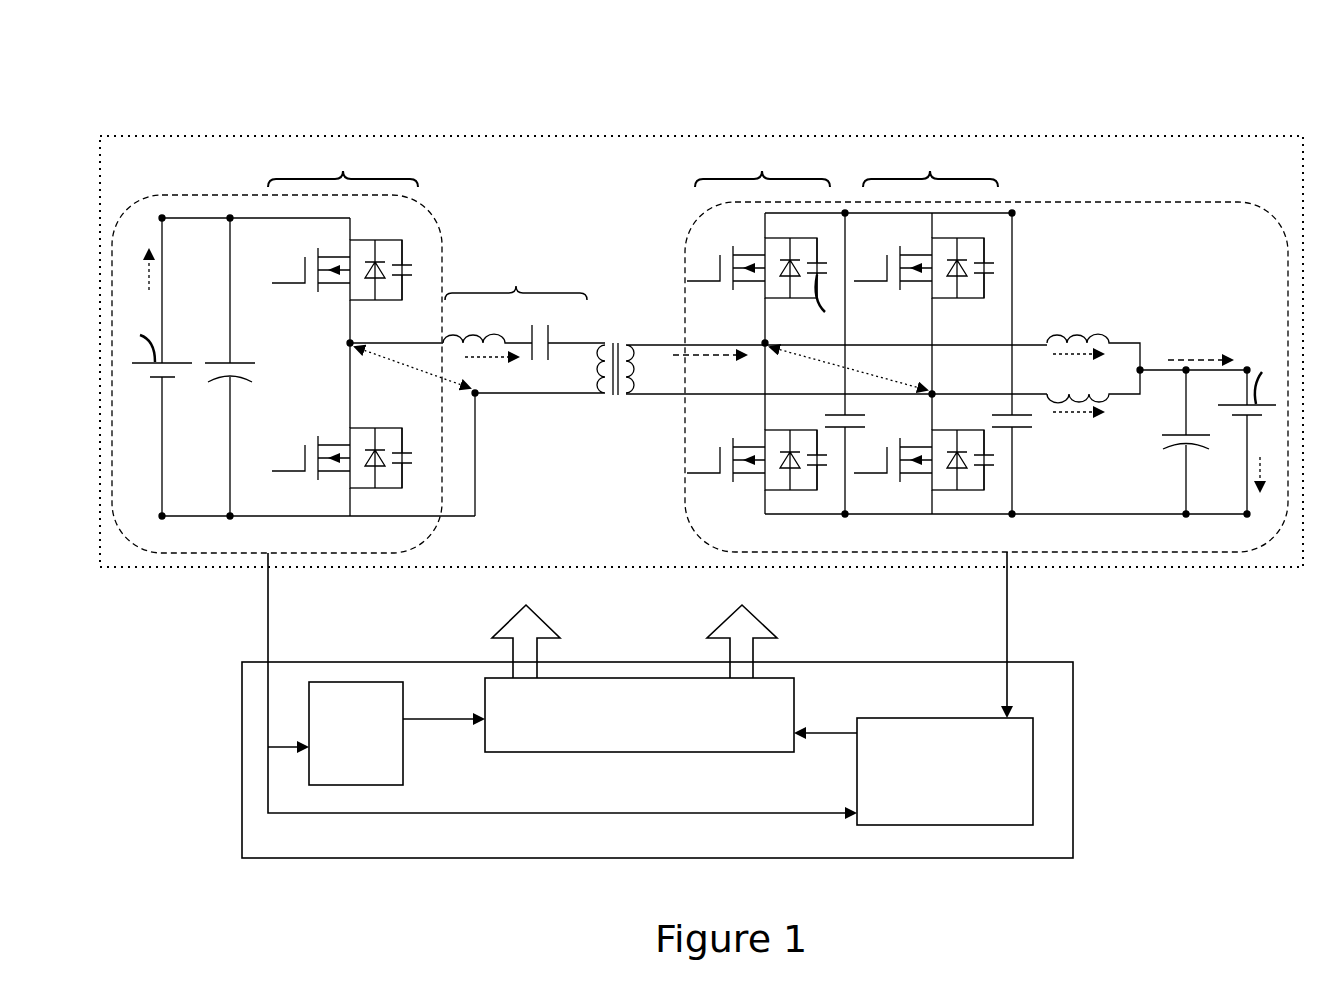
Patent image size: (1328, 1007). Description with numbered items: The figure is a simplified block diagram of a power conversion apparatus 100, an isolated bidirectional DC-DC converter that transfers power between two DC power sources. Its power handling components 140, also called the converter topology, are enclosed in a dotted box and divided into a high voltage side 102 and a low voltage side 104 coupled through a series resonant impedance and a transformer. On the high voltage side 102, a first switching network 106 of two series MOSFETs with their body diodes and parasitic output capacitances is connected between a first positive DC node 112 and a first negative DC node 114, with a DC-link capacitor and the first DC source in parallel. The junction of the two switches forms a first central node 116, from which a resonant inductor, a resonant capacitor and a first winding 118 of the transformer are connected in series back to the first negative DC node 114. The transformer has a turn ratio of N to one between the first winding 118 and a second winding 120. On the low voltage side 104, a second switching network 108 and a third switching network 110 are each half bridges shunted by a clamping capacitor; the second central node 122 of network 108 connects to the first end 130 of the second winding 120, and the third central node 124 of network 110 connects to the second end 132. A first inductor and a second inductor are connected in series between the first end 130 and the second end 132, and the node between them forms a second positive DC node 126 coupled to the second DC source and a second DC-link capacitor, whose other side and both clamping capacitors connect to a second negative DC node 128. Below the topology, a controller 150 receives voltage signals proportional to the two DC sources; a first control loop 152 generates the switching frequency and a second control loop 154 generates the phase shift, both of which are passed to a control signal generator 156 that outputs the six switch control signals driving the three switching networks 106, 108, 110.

The power conversion apparatus 100 is at (1098, 88).
The high voltage side 102 is at (440, 214).
The low voltage side 104 is at (1205, 198).
The first switching network 106 is at (367, 332).
The second switching network 108 is at (768, 331).
The third switching network 110 is at (926, 331).
The first positive DC node 112 is at (230, 218).
The first negative DC node 114 is at (230, 516).
The first central node 116 is at (350, 343).
The first winding 118 is at (580, 376).
The second winding 120 is at (761, 359).
The second central node 122 is at (765, 343).
The third central node 124 is at (932, 394).
The second positive DC node 126 is at (1140, 370).
The second negative DC node 128 is at (1186, 514).
The first end of second winding 130 is at (640, 348).
The second end of second winding 132 is at (640, 396).
The power handling components 140 is at (680, 134).
The controller 150 is at (1073, 662).
The first control loop 152 is at (356, 733).
The second control loop 154 is at (945, 771).
The control signal generator 156 is at (647, 665).